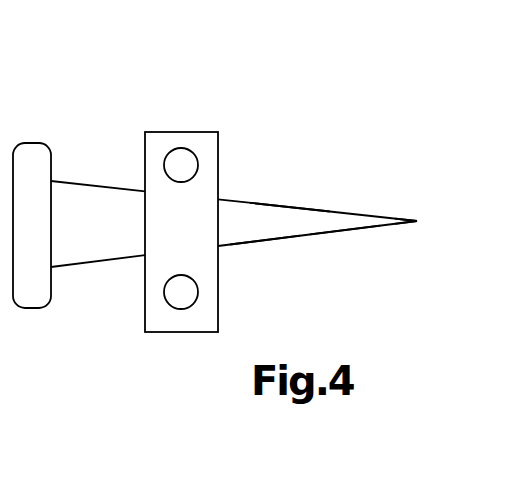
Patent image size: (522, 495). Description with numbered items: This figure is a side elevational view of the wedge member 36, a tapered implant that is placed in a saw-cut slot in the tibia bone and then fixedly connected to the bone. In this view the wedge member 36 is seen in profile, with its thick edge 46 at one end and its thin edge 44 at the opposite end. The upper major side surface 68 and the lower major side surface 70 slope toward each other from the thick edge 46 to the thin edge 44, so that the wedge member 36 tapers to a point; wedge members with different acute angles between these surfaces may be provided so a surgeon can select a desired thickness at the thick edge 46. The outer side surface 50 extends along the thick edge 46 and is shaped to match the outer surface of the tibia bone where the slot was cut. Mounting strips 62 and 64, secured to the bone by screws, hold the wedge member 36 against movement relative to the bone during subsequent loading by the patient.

The wedge member 36 is at (250, 166).
The thin edge 44 is at (417, 222).
The thick edge 46 is at (52, 220).
The outer side surface 50 is at (243, 219).
The mounting strip 62 is at (33, 310).
The mounting strip 64 is at (202, 322).
The upper major side surface 68 is at (288, 205).
The lower major side surface 70 is at (333, 233).